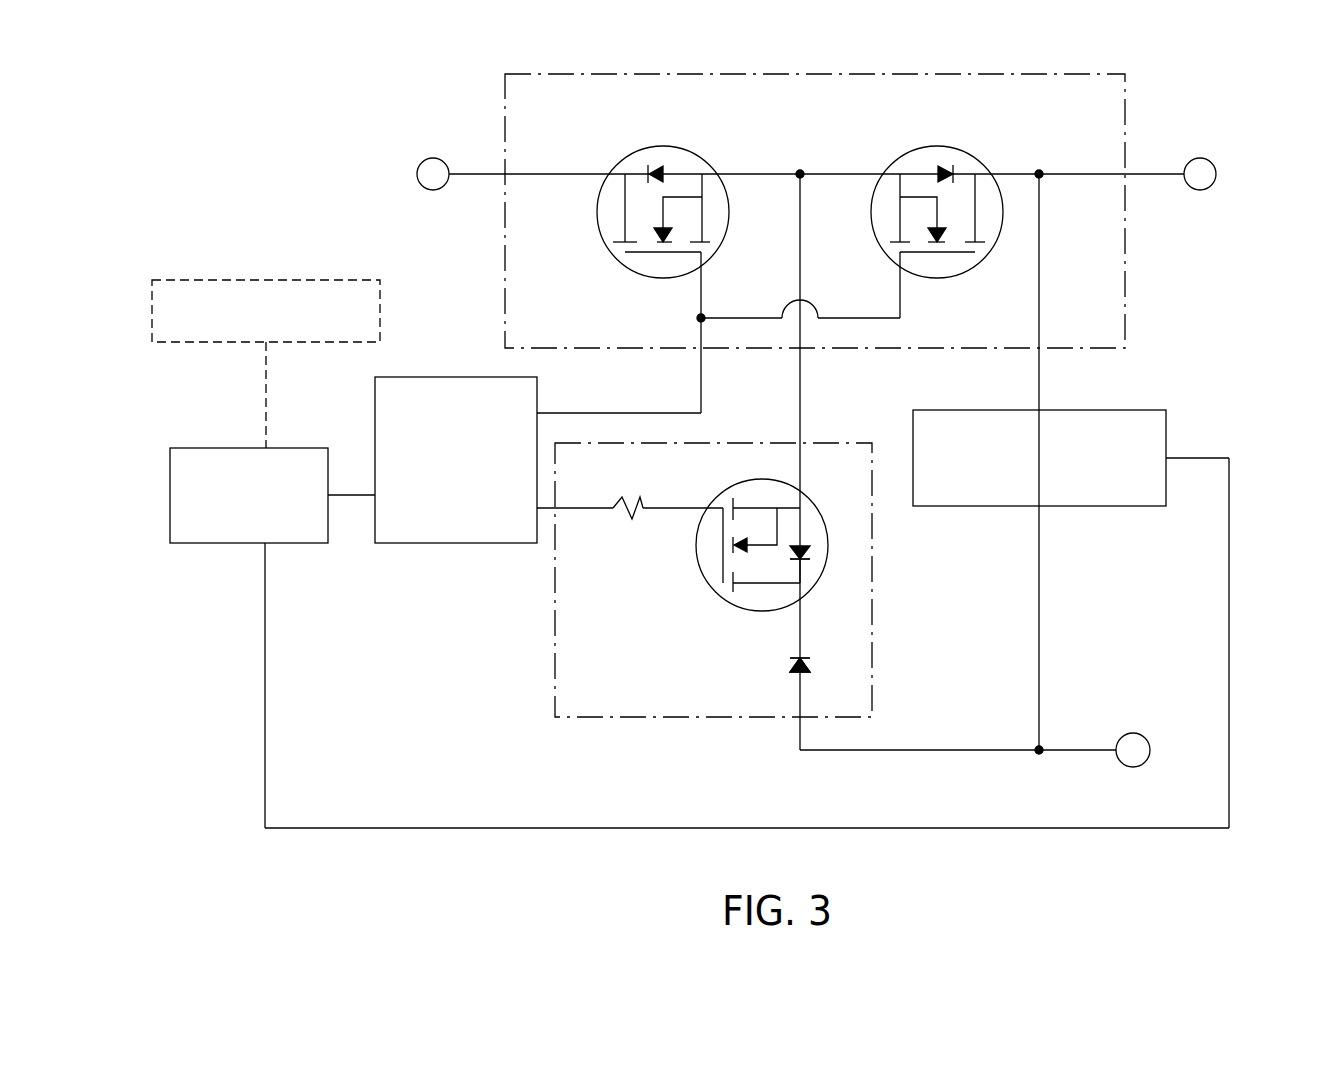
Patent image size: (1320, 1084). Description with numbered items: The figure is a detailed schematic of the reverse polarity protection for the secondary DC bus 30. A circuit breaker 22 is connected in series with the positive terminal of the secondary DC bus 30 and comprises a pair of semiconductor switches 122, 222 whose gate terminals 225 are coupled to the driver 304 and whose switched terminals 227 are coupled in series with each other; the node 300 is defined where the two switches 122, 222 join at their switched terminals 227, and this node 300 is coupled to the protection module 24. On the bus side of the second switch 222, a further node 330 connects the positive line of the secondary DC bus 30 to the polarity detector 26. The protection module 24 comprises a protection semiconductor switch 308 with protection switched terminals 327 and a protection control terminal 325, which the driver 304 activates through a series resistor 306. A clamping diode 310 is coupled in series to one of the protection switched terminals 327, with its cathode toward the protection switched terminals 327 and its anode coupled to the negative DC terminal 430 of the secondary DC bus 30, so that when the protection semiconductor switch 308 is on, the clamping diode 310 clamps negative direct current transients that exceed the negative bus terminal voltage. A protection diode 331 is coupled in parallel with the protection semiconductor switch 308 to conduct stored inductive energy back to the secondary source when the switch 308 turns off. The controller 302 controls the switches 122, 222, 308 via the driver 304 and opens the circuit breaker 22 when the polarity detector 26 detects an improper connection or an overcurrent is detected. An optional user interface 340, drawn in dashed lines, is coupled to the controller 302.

The circuit breaker 22 is at (505, 333).
The protection module 24 is at (555, 663).
The polarity detector 26 is at (1166, 430).
The secondary DC bus 30 is at (433, 191).
The semiconductor switch 122 is at (613, 253).
The semiconductor switch 222 is at (965, 273).
The gate terminals 225 is at (701, 318).
The switched terminals 227 is at (555, 174).
The node 300 is at (800, 174).
The controller 302 is at (218, 543).
The driver 304 is at (435, 543).
The series resistor 306 is at (633, 520).
The protection semiconductor switch 308 is at (732, 605).
The clamping diode 310 is at (792, 659).
The protection control terminal 325 is at (675, 510).
The protection switched terminals 327 is at (803, 500).
The node 330 is at (1070, 174).
The protection diode 331 is at (805, 572).
The user interface 340 is at (205, 279).
The negative DC terminal 430 is at (1082, 750).